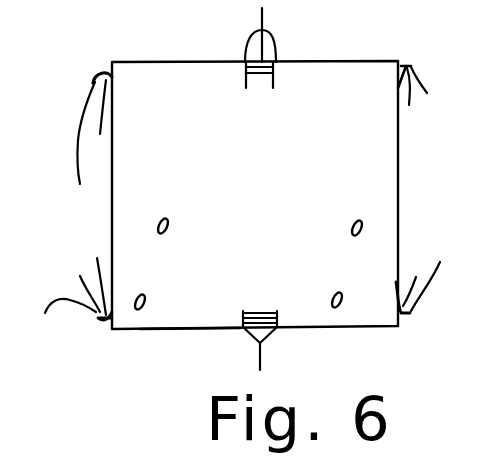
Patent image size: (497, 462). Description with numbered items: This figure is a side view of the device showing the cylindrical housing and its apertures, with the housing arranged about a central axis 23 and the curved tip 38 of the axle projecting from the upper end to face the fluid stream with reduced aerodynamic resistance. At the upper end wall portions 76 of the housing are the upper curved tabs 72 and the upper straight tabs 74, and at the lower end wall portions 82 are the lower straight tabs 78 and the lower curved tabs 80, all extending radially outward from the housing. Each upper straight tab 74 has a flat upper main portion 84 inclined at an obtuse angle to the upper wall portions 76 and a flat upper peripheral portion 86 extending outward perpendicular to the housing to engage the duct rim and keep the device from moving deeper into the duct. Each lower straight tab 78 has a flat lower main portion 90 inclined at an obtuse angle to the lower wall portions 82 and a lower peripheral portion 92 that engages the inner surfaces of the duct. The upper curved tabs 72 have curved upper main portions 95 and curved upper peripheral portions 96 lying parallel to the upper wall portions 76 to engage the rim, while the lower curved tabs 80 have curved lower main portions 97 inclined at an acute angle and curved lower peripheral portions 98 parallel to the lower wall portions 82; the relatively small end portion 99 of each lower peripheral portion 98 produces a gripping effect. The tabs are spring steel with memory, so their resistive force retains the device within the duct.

The axis 23 is at (263, 370).
The tip 38 is at (280, 47).
The upper curved tabs 72 is at (101, 61).
The upper straight tabs 74 is at (414, 56).
The upper end wall portions 76 is at (185, 77).
The lower straight tabs 78 is at (413, 318).
The lower curved tabs 80 is at (100, 322).
The lower end wall portions 82 is at (198, 321).
The upper main portions 84 is at (412, 103).
The upper peripheral portions 86 is at (433, 92).
The lower main portions 90 is at (417, 279).
The lower peripheral portions 92 is at (433, 271).
The upper main portions 95 is at (97, 120).
The upper peripheral portions 96 is at (91, 144).
The lower main portions 97 is at (98, 275).
The lower peripheral portions 98 is at (82, 285).
The end portion 99 is at (59, 322).